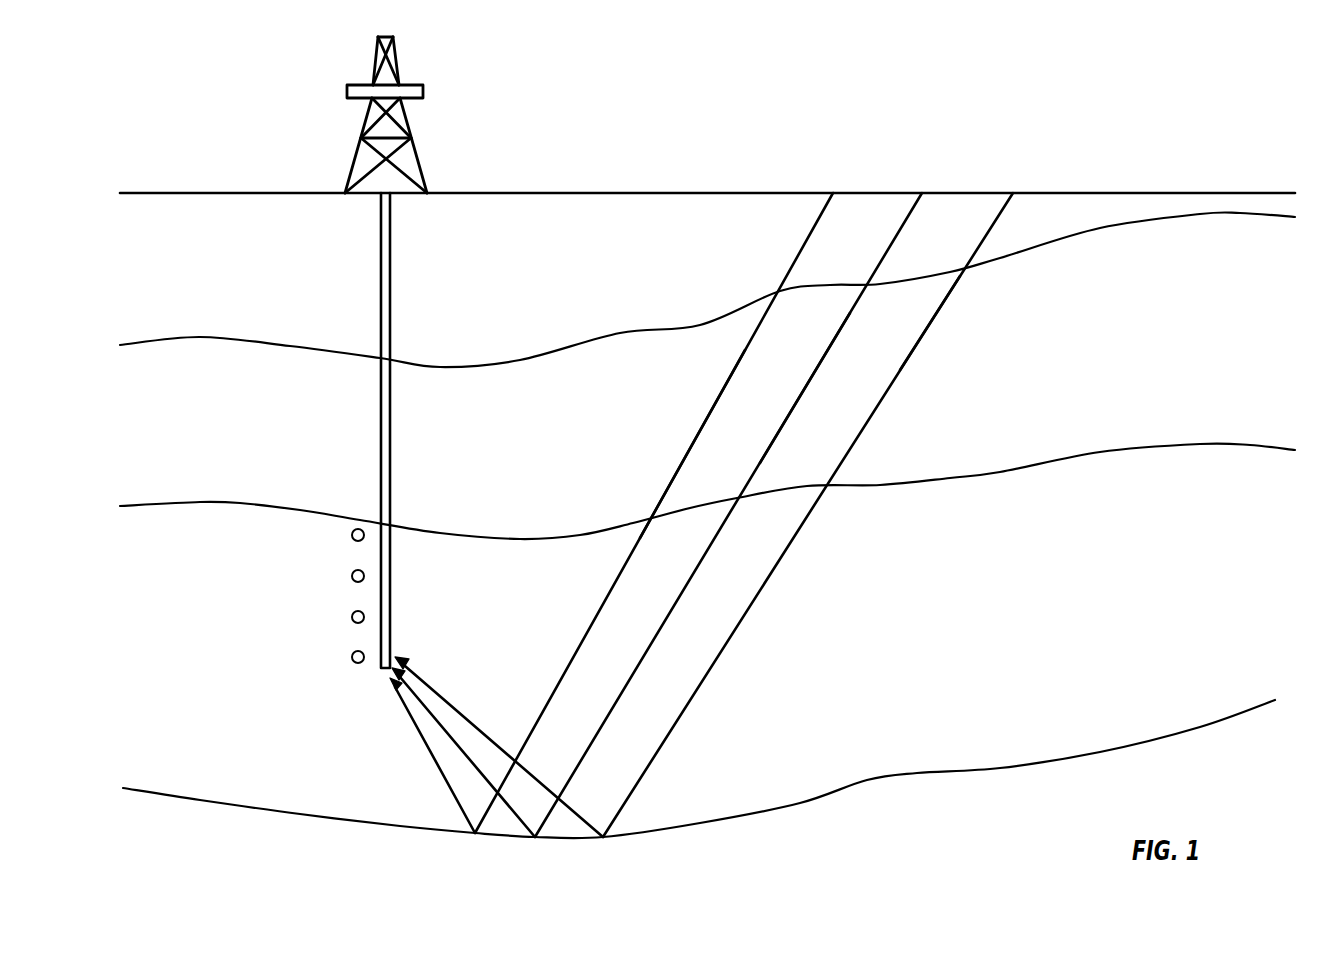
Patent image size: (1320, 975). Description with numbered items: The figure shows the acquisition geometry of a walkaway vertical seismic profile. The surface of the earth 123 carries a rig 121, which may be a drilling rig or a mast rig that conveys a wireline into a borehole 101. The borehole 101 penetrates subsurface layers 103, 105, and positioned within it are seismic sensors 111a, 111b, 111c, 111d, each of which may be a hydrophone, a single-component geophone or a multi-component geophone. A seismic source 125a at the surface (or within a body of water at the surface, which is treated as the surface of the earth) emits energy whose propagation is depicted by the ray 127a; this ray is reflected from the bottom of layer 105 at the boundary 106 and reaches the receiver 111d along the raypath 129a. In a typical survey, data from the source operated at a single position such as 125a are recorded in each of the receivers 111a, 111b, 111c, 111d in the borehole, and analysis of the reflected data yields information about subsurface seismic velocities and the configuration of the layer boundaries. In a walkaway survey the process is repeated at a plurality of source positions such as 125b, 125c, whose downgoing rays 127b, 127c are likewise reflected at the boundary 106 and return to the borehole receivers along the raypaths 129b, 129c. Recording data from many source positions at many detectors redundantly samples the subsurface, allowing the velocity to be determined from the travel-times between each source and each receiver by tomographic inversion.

The borehole 101 is at (382, 273).
The layer 103 is at (168, 278).
The layer 105 is at (168, 432).
The boundary 106 is at (140, 789).
The seismic sensor 111a is at (351, 537).
The seismic sensor 111b is at (351, 578).
The seismic sensor 111c is at (351, 619).
The seismic sensor 111d is at (351, 659).
The rig 121 is at (408, 84).
The surface of the earth 123 is at (612, 193).
The seismic source 125a is at (833, 193).
The source position 125b is at (922, 193).
The source position 125c is at (1013, 193).
The ray 127a is at (696, 437).
The ray 127b is at (824, 357).
The ray 127c is at (937, 313).
The raypath 129a is at (400, 695).
The raypath 129b is at (438, 722).
The raypath 129c is at (495, 745).